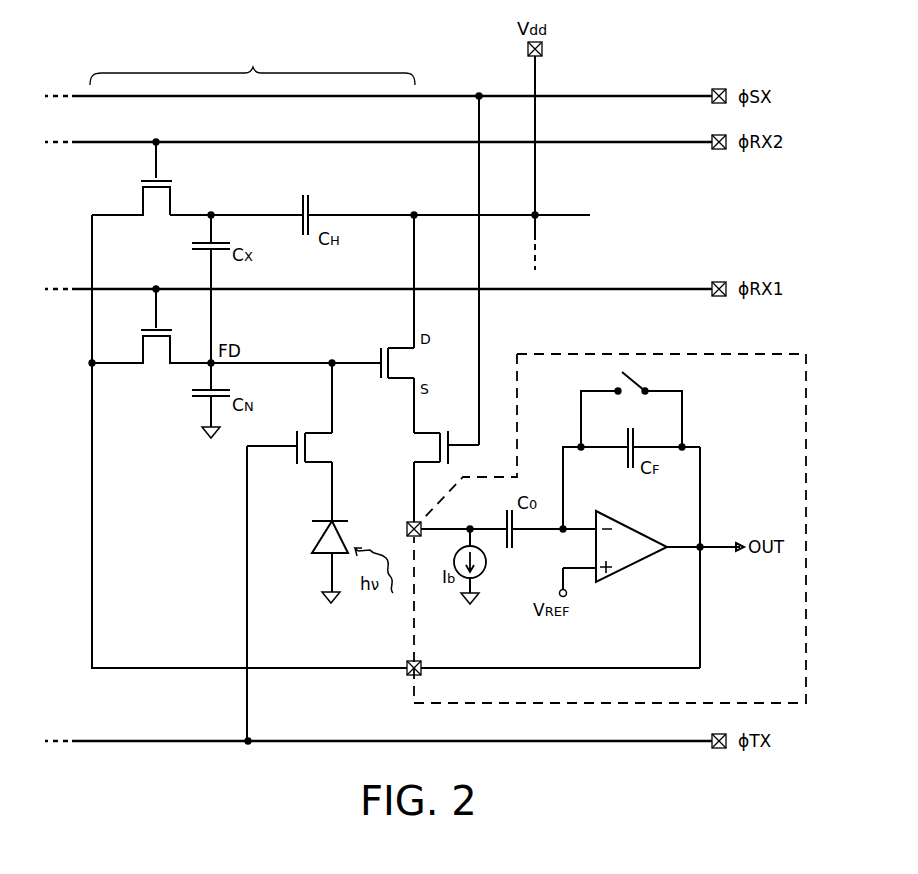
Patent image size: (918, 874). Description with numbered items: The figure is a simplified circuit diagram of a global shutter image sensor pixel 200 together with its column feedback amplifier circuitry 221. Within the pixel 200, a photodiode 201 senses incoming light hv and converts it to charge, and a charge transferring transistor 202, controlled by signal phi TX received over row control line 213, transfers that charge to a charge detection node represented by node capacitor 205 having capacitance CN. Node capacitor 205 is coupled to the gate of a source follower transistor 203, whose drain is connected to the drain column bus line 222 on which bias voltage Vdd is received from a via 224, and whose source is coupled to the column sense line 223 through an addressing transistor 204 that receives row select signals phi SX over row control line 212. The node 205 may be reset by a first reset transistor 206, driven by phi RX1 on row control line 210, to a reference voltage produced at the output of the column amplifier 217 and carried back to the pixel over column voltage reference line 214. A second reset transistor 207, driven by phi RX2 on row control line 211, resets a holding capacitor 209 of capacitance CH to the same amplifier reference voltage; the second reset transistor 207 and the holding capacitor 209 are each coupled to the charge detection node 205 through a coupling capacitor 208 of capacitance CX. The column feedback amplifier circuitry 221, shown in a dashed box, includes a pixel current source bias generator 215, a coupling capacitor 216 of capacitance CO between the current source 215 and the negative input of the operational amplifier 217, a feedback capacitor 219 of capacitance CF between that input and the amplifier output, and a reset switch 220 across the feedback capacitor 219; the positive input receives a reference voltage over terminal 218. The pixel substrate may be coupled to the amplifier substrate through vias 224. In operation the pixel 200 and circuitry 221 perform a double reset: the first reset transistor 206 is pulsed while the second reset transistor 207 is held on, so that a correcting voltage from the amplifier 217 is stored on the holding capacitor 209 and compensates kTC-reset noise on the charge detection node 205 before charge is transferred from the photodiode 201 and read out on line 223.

The pixel 200 is at (252, 66).
The photodiode 201 is at (326, 541).
The charge transferring transistor 202 is at (333, 449).
The source follower transistor 203 is at (405, 363).
The addressing transistor 204 is at (420, 446).
The charge detection node capacitor 205 is at (192, 395).
The reset transistor 206 is at (157, 352).
The second reset transistor 207 is at (156, 210).
The coupling capacitor 208 is at (192, 247).
The holding capacitor 209 is at (303, 194).
The row control line 210 is at (656, 277).
The row control line 211 is at (656, 130).
The row control line 212 is at (656, 84).
The row control line 213 is at (656, 729).
The column voltage reference line 214 is at (93, 590).
The pixel current source bias generator 215 is at (484, 566).
The coupling capacitor 216 is at (509, 513).
The operational amplifier 217 is at (630, 562).
The terminal 218 is at (568, 595).
The feedback capacitor 219 is at (630, 465).
The reset switch 220 is at (640, 384).
The column feedback amplifier circuitry 221 is at (720, 358).
The drain column bus line 222 is at (537, 240).
The column sense line 223 is at (407, 528).
The via 224 is at (528, 49).